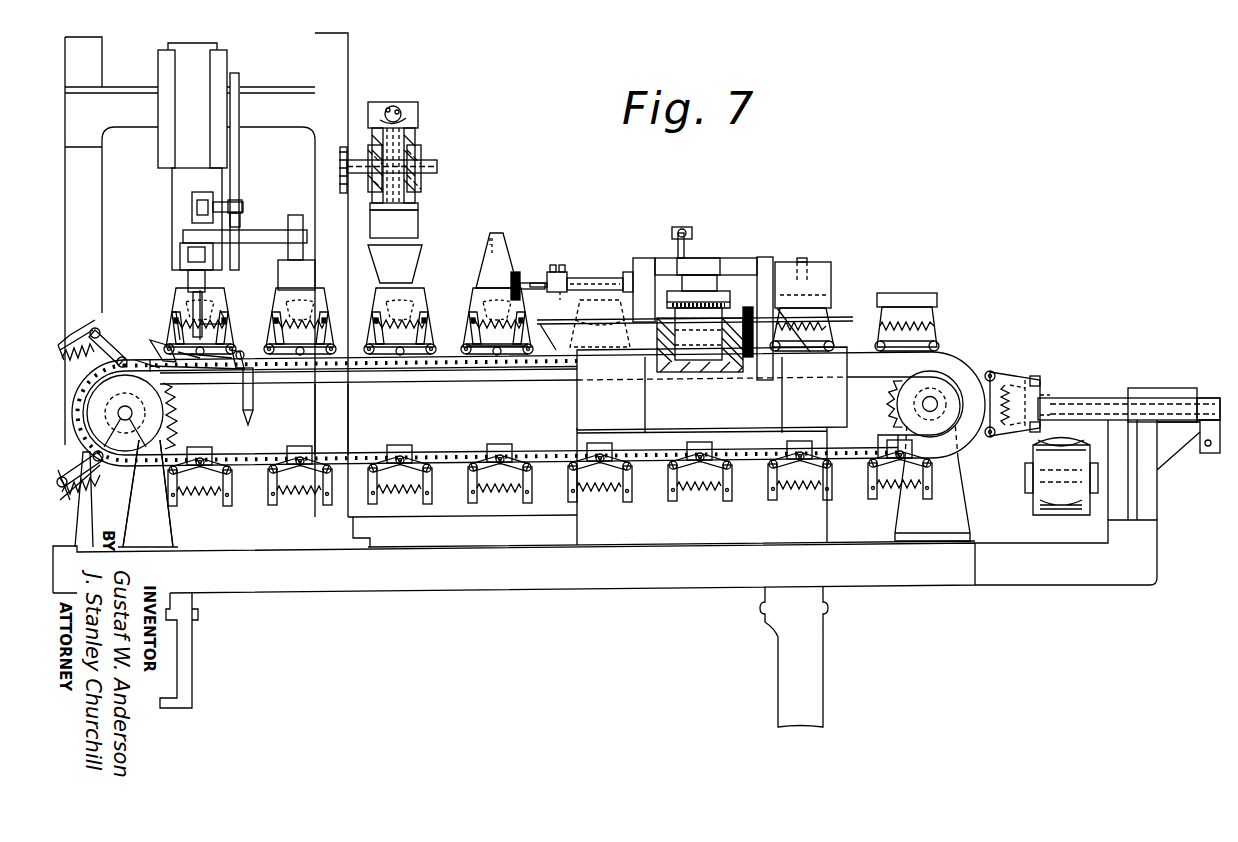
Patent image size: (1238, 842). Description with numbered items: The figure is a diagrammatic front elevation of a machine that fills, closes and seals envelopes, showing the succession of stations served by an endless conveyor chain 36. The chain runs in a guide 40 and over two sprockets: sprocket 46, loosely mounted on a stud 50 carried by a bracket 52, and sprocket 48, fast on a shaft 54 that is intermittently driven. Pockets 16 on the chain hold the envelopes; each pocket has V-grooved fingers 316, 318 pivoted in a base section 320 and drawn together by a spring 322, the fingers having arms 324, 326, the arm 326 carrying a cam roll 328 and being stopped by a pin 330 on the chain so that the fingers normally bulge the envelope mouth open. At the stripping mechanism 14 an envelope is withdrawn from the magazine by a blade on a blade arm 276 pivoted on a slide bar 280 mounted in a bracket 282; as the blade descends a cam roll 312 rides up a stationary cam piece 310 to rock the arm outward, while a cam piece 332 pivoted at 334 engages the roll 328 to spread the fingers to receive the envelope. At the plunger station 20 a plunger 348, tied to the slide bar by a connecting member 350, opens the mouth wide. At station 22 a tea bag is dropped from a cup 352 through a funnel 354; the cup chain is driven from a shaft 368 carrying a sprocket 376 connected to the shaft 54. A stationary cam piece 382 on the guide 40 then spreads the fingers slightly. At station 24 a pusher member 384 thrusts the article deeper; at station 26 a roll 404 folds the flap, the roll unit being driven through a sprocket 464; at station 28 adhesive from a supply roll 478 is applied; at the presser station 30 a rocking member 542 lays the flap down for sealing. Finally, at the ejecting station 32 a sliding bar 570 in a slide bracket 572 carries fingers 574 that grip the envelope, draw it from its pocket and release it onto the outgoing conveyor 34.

The stripping mechanism 14 is at (168, 248).
The pockets 16 is at (947, 300).
The plunger station 20 is at (275, 290).
The article inserting station 22 is at (423, 289).
The pusher station 24 is at (516, 241).
The flap folding station 26 is at (604, 236).
The adhesive applying station 28 is at (712, 233).
The presser station 30 is at (812, 241).
The ejecting station 32 is at (1033, 350).
The outgoing conveyor 34 is at (1085, 440).
The conveyor chain 36 is at (348, 370).
The chain guide 40 is at (388, 378).
The sprocket 46 is at (176, 432).
The sprocket 48 is at (890, 402).
The stud 50 is at (124, 420).
The bracket 52 is at (165, 530).
The shaft 54 is at (938, 398).
The blade arm 276 is at (186, 282).
The slide bar 280 is at (172, 198).
The bracket 282 is at (250, 97).
The stationary cam piece 310 is at (237, 150).
The cam roll 312 is at (232, 205).
The finger 316 is at (173, 318).
The finger 318 is at (232, 310).
The base section 320 is at (228, 326).
The spring 322 is at (230, 289).
The arm 324 is at (170, 372).
The arm 326 is at (215, 365).
The cam roll 328 is at (226, 370).
The pin 330 is at (220, 368).
The cam piece 332 is at (170, 350).
The pivot 334 is at (190, 356).
The plunger 348 is at (288, 260).
The connecting member 350 is at (247, 230).
The cup 352 is at (418, 118).
The funnel 354 is at (415, 283).
The shaft 368 is at (430, 170).
The sprocket 376 is at (340, 170).
The stationary cam piece 382 is at (450, 348).
The pusher member 384 is at (485, 260).
The folding roll 404 is at (606, 278).
The sprocket 464 is at (520, 288).
The supply roll 478 is at (713, 355).
The rocking member 542 is at (826, 302).
The sliding bar 570 is at (1062, 436).
The slide bracket 572 is at (1150, 390).
The fingers 574 is at (1046, 398).